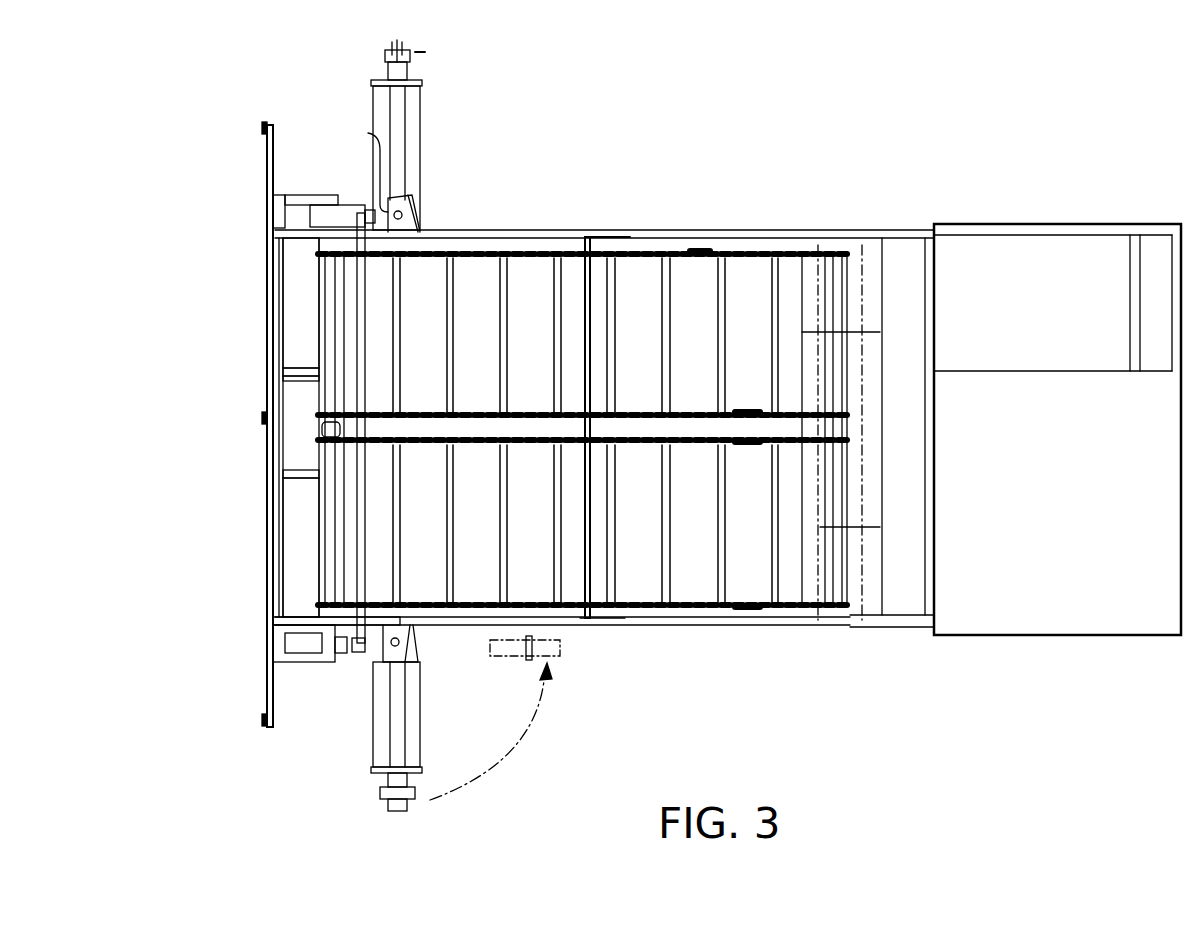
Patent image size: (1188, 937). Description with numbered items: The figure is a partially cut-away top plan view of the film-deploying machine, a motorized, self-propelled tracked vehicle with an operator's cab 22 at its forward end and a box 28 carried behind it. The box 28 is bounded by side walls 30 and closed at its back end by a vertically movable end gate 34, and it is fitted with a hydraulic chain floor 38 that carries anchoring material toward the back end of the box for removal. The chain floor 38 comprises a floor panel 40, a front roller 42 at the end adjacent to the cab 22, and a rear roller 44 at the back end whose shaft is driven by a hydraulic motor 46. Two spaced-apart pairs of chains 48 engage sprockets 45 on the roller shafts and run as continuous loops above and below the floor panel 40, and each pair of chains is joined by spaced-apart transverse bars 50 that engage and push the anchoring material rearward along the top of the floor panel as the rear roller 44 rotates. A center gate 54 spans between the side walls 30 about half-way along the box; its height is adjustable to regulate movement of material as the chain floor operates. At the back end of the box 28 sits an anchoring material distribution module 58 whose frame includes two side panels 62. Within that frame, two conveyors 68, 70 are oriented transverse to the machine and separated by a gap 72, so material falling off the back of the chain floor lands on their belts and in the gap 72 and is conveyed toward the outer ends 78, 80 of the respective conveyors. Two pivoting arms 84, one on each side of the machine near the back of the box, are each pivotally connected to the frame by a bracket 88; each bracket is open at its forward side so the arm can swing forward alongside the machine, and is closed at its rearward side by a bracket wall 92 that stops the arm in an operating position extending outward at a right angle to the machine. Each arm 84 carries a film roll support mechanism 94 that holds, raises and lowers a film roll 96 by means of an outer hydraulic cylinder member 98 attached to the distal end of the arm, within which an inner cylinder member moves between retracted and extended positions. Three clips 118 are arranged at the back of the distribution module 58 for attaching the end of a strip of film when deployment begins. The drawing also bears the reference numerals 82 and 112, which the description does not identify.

The operator's cab 22 is at (1030, 250).
The box 28 is at (648, 230).
The side walls 30 is at (525, 230).
The end gate 34 is at (358, 310).
The hydraulic chain floor 38 is at (585, 390).
The floor panel 40 is at (624, 348).
The front roller 42 is at (843, 285).
The rear roller 44 is at (317, 345).
The sprockets 45 is at (317, 252).
The hydraulic motor 46 is at (343, 207).
The chains 48 is at (699, 250).
The bars 50 is at (500, 303).
The center gate 54 is at (585, 288).
The anchoring material distribution module 58 is at (258, 177).
The side panels 62 is at (303, 233).
The conveyor 68 is at (298, 282).
The conveyor 70 is at (300, 522).
The gap 72 is at (292, 427).
The outer end 78 is at (307, 662).
The outer end 80 is at (305, 195).
The clip 82 is at (297, 383).
The pivoting arms 84 is at (397, 107).
The bracket 88 is at (407, 197).
The bracket wall 92 is at (374, 137).
The film roll support mechanism 94 is at (456, 72).
The film roll 96 is at (422, 137).
The outer hydraulic cylinder member 98 is at (383, 68).
The hose fitting 112 is at (403, 42).
The clips 118 is at (260, 132).